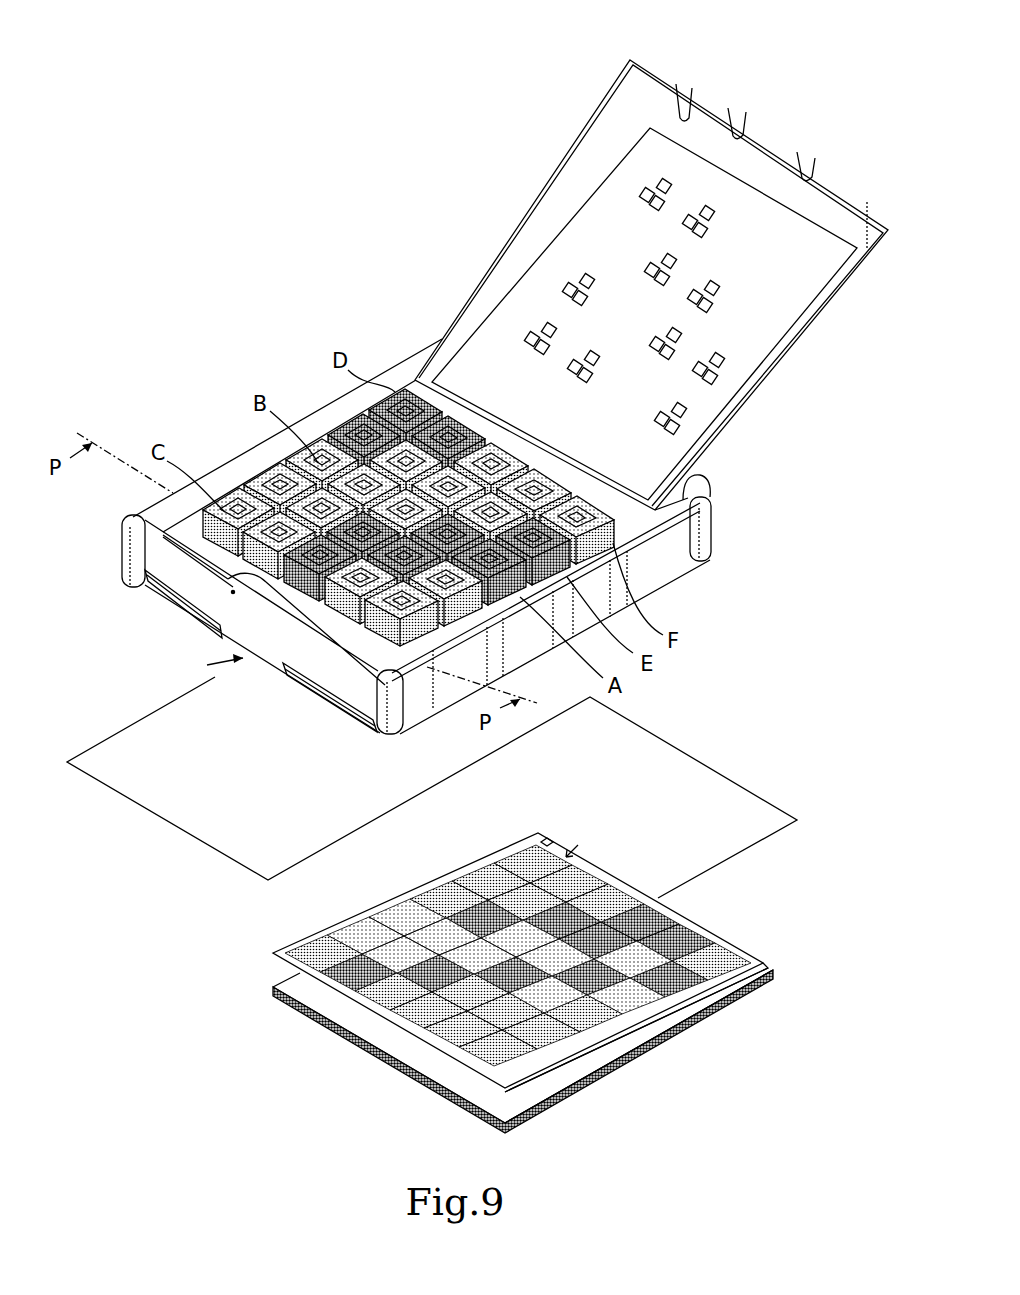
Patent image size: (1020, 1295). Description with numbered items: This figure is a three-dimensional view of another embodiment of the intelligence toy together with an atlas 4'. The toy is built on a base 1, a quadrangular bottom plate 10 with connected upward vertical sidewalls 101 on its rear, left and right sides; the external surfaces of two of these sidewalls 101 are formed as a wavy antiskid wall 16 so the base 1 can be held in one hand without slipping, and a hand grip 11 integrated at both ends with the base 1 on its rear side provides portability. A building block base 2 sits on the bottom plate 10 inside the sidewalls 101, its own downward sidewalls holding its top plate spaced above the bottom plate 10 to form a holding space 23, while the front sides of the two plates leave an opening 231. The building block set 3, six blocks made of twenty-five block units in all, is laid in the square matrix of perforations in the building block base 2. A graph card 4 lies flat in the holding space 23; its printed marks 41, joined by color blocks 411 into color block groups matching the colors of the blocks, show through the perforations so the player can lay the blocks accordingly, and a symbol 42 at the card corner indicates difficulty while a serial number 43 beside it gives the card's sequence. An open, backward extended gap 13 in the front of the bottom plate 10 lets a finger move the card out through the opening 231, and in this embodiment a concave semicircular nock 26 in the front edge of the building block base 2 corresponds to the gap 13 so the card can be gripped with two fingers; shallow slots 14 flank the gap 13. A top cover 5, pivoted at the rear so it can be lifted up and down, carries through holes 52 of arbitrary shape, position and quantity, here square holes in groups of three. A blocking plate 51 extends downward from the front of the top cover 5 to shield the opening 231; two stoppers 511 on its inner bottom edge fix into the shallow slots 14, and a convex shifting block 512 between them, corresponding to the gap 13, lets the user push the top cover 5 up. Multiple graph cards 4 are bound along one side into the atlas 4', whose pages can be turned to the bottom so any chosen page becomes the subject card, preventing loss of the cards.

The base 1 is at (722, 564).
The building block base 2 is at (340, 623).
The building block set 3 is at (353, 423).
The graph card 4 is at (432, 884).
The atlas 4' is at (566, 955).
The top cover 5 is at (635, 172).
The bottom plate 10 is at (207, 597).
The hand grip 11 is at (700, 477).
The gap 13 is at (283, 645).
The shallow slots 14 is at (210, 637).
The antiskid wall 16 is at (260, 448).
The holding space 23 is at (233, 594).
The nock 26 is at (297, 637).
The mark 41 is at (690, 1117).
The symbol 42 is at (574, 849).
The serial number 43 is at (547, 838).
The blocking plate 51 is at (842, 176).
The through holes 52 is at (590, 270).
The sidewalls 101 is at (152, 527).
The opening 231 is at (198, 570).
The color blocks 411 is at (690, 1013).
The stoppers 511 is at (679, 114).
The shifting block 512 is at (731, 133).